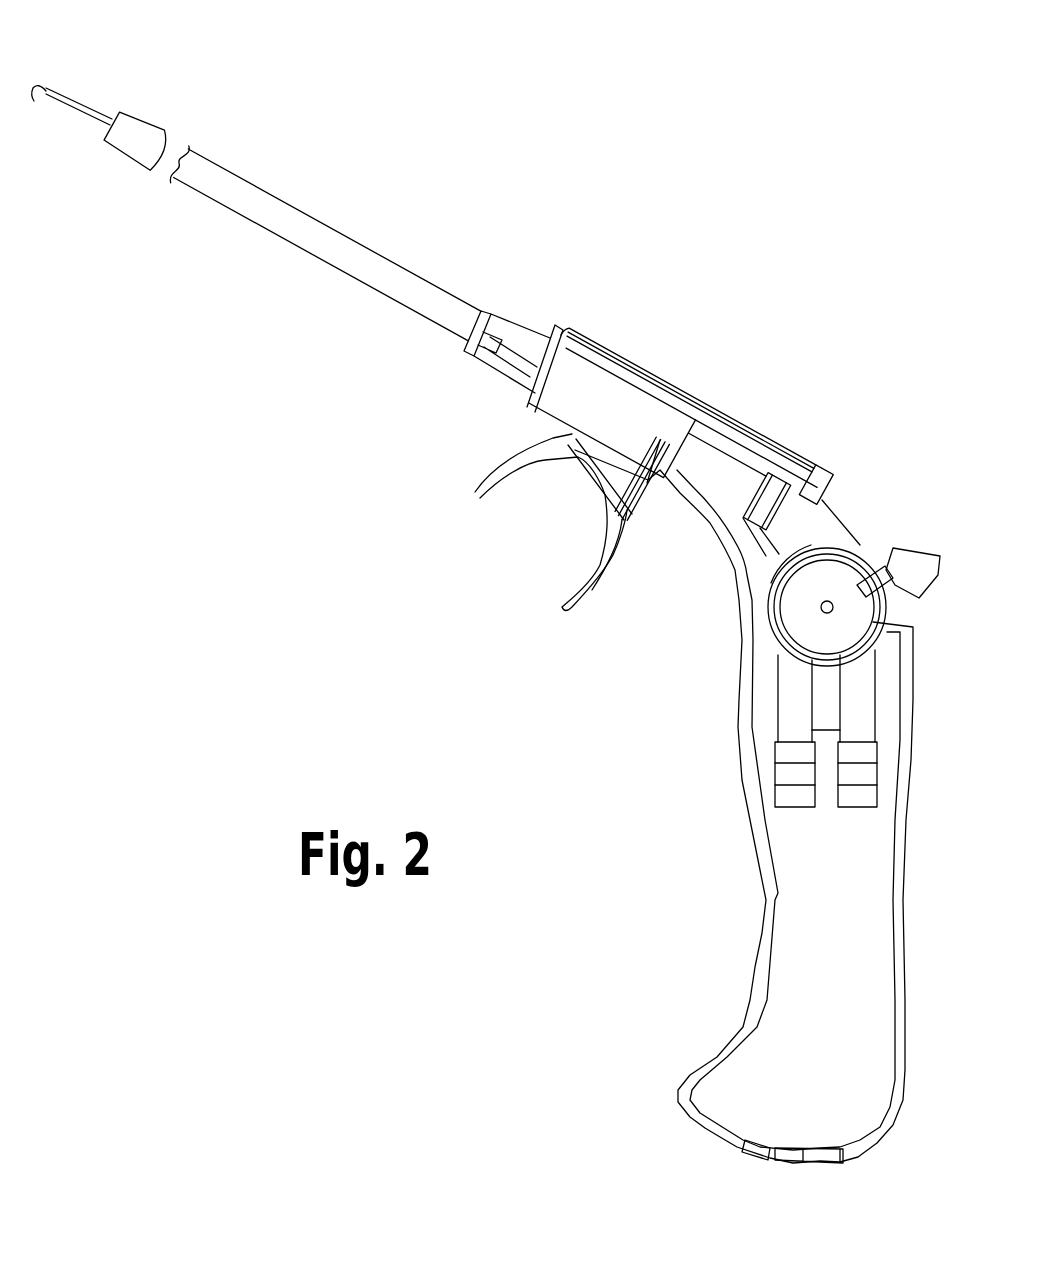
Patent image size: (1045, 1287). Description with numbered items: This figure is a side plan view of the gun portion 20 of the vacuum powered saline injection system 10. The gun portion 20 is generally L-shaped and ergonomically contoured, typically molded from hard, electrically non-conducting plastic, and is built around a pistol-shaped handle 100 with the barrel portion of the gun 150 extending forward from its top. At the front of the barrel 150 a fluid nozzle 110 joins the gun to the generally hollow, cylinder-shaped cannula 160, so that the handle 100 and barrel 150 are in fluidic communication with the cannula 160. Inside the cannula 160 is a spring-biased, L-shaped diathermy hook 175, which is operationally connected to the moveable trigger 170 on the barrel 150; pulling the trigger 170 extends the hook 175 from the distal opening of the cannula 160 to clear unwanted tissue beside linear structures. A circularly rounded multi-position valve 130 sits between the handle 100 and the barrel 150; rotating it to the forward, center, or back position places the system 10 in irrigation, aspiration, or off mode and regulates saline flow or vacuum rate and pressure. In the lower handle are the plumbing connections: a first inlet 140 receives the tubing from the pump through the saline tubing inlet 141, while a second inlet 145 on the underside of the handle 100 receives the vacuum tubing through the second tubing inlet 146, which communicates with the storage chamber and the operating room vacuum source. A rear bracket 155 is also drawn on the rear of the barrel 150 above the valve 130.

The vacuum powered saline injection system 10 is at (722, 126).
The gun portion 20 is at (657, 885).
The pistol-shaped handle 100 is at (735, 1013).
The fluid nozzle 110 is at (525, 323).
The multi-position valve 130 is at (917, 547).
The first inlet 140 is at (820, 1160).
The tubing inlet 141 is at (853, 810).
The second inlet 145 is at (757, 1152).
The second tubing inlet 146 is at (790, 810).
The barrel portion of the gun 150 is at (798, 448).
The rear bracket 155 is at (817, 466).
The cannula 160 is at (268, 193).
The trigger 170 is at (486, 484).
The diathermy hook 175 is at (84, 104).